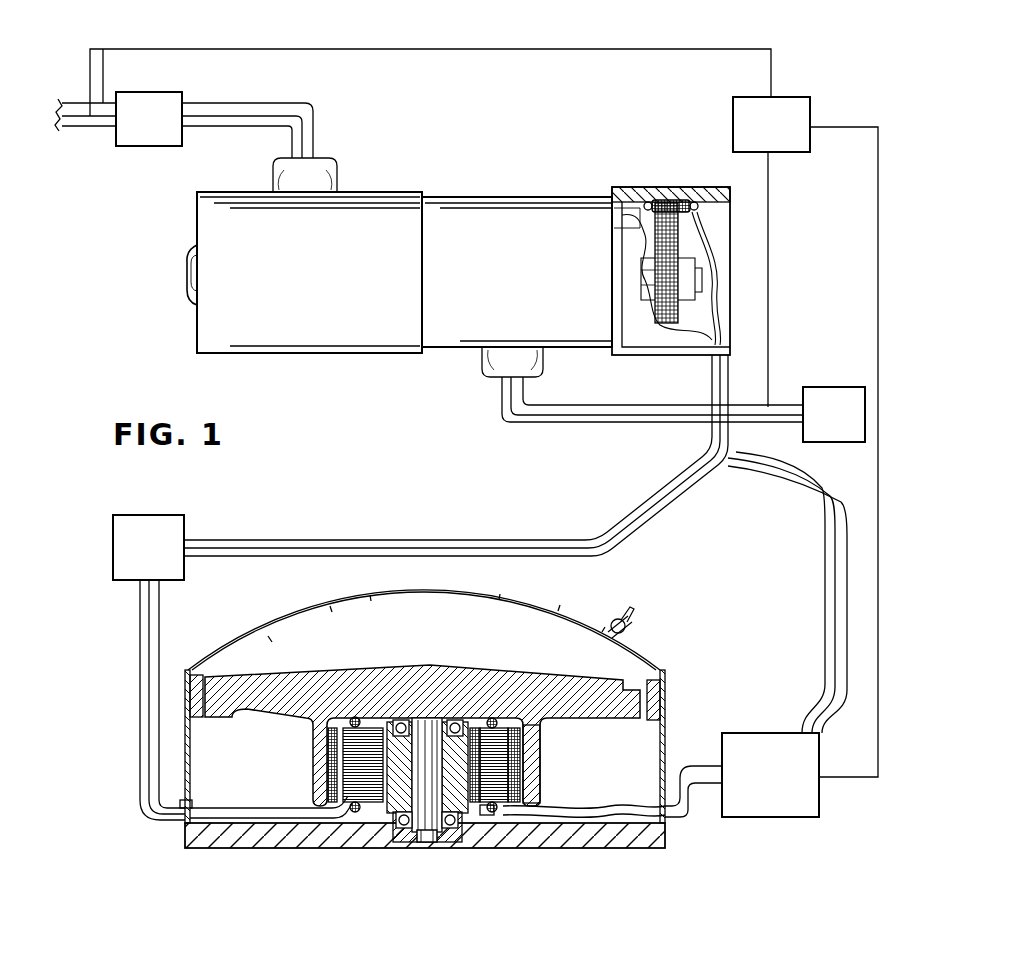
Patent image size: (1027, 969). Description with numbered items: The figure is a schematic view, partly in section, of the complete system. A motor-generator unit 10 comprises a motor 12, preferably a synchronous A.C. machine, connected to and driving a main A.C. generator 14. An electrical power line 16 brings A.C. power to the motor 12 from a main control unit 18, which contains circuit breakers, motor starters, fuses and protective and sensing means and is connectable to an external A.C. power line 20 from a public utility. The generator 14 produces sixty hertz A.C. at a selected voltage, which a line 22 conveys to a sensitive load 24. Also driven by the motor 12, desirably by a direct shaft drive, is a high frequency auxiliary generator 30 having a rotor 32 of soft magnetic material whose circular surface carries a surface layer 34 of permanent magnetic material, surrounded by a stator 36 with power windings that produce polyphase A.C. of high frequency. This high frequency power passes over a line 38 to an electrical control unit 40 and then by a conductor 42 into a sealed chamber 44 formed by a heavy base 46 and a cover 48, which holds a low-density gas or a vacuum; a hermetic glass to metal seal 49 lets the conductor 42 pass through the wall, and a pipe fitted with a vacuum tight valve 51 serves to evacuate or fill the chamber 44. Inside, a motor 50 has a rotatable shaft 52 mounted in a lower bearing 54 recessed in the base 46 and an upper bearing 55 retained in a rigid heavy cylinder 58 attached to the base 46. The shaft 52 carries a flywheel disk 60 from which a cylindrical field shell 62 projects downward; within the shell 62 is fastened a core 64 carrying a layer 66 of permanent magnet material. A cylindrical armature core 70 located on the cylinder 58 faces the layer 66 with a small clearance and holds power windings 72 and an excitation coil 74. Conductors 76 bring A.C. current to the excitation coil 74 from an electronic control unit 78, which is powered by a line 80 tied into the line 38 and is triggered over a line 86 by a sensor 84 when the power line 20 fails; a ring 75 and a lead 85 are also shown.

The motor-generator unit 10 is at (378, 256).
The motor 12 is at (210, 265).
The main A.C. generator 14 is at (491, 197).
The electrical power line 16 is at (291, 101).
The main control unit 18 is at (137, 136).
The external A.C. power line 20 is at (58, 104).
The line 22 is at (571, 404).
The sensitive load 24 is at (823, 386).
The high frequency auxiliary generator 30 is at (688, 245).
The rotor 32 is at (682, 246).
The surface layer of permanent magnetic material 34 is at (663, 233).
The stator 36 is at (673, 196).
The line 38 is at (723, 392).
The electrical control unit 40 is at (167, 512).
The conductor 42 is at (140, 645).
The sealed chamber 44 is at (428, 768).
The heavy base 46 is at (614, 851).
The cover 48 is at (258, 628).
The hermetic glass to metal seal 49 is at (630, 637).
The motor 50 is at (412, 771).
The vacuum tight valve 51 is at (632, 622).
The rotatable shaft 52 is at (407, 836).
The lower bearing 54 is at (447, 837).
The upper bearing 55 is at (455, 717).
The rigid heavy cylinder 58 is at (382, 813).
The flywheel disk 60 is at (378, 670).
The cylindrical field shell 62 is at (542, 748).
The core 64 is at (329, 792).
The layer of magnetizable permanent magnet material 66 is at (337, 760).
The cylindrical armature core 70 is at (500, 770).
The power windings 72 is at (352, 818).
The excitation coil 74 is at (222, 720).
The ring 75 is at (659, 696).
The conductors 76 is at (614, 809).
The electronic control unit 78 is at (758, 821).
The line 80 is at (823, 628).
The sensor 84 is at (791, 105).
The sensor lead 85 is at (771, 262).
The line 86 is at (579, 48).